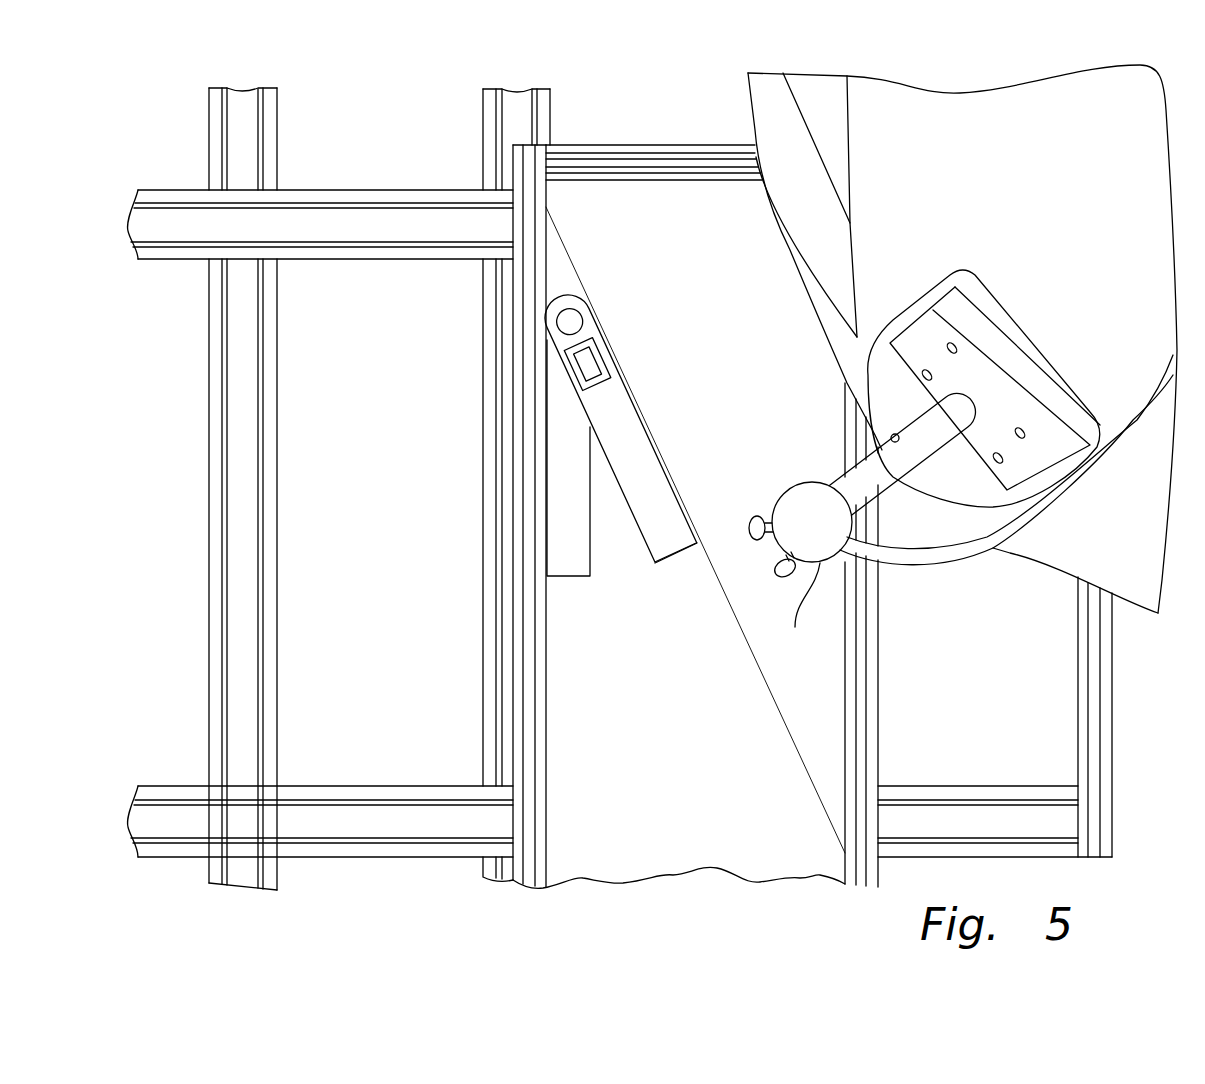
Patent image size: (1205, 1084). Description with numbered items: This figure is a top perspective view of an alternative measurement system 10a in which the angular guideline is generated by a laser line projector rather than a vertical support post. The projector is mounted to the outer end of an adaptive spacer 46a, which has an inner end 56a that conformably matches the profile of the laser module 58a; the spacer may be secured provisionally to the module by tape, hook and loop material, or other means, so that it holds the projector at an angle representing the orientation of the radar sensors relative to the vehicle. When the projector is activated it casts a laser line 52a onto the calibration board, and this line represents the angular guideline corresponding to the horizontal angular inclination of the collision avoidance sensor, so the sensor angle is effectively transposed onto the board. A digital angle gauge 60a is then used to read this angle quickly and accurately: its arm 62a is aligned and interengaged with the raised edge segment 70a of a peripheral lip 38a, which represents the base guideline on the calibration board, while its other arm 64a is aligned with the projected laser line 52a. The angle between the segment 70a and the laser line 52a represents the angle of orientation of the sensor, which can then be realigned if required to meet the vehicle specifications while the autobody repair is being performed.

The measurement system 10a is at (400, 80).
The peripheral lip 38a is at (547, 807).
The adaptive spacer 46a is at (840, 460).
The laser line 52a is at (772, 700).
The inner end 56a is at (975, 368).
The laser module 58a is at (1040, 410).
The digital angle gauge 60a is at (566, 298).
The arm 62a is at (565, 577).
The arm 64a is at (673, 555).
The raised edge segment 70a is at (538, 745).